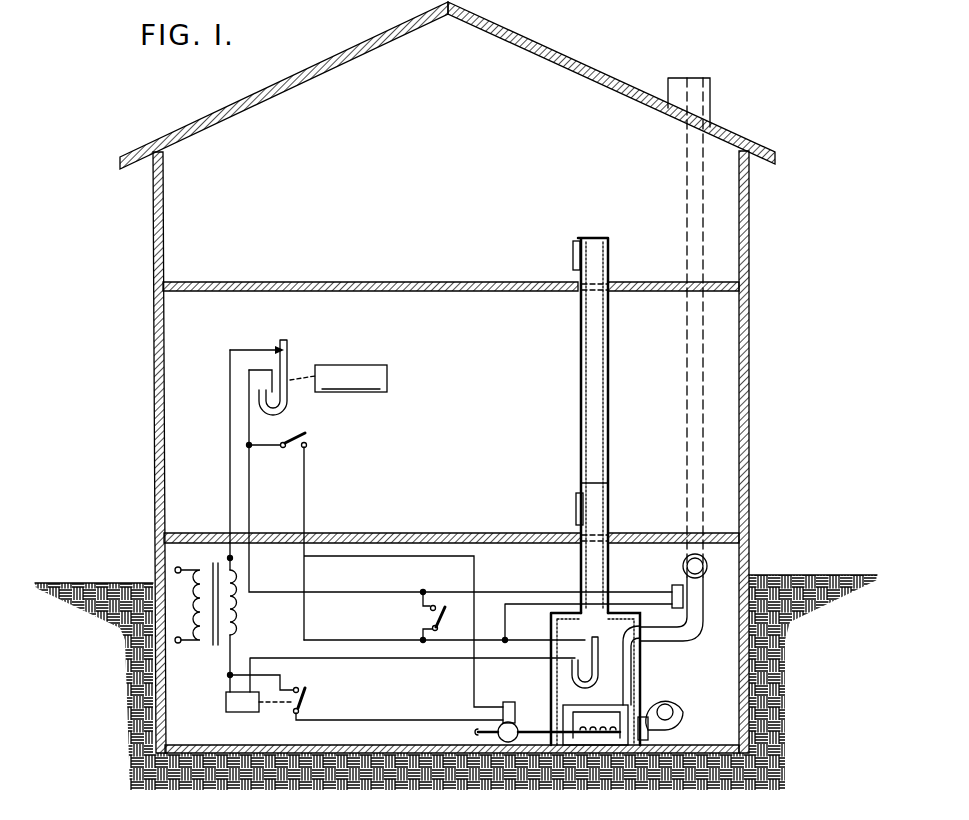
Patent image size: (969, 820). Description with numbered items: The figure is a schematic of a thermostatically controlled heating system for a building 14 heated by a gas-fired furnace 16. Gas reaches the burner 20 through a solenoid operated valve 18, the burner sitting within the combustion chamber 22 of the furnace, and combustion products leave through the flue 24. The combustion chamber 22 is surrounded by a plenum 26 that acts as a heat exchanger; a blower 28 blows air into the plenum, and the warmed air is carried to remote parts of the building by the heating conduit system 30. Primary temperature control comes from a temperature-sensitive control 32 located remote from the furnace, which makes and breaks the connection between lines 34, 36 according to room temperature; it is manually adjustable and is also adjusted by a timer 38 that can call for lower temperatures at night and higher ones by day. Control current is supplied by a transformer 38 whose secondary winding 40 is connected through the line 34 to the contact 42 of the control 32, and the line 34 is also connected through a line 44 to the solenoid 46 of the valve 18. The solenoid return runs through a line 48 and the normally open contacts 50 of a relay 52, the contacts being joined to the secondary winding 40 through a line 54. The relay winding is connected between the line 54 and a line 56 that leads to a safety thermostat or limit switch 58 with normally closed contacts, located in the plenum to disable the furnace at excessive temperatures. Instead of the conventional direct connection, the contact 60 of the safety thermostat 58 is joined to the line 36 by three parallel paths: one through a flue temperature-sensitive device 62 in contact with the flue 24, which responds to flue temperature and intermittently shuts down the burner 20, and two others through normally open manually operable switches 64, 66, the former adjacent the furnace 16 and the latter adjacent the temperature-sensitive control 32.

The building 14 is at (756, 448).
The gas-fired furnace 16 is at (652, 668).
The solenoid operated valve 18 is at (516, 725).
The burner 20 is at (594, 736).
The combustion chamber 22 is at (618, 740).
The flue 24 is at (690, 628).
The plenum 26 is at (648, 697).
The blower 28 is at (684, 712).
The heating conduit system 30 is at (605, 446).
The temperature-sensitive control 32 is at (290, 351).
The line 34 is at (230, 490).
The line 36 is at (249, 492).
The timer / transformer 38 is at (366, 365).
The secondary winding 40 is at (238, 618).
The contact 42 is at (275, 347).
The line 44 is at (412, 556).
The solenoid 46 is at (505, 703).
The line 48 is at (366, 719).
The normally open contacts 50 is at (310, 696).
The relay 52 is at (250, 708).
The line 54 is at (231, 651).
The line 56 is at (415, 659).
The safety thermostat 58 is at (572, 676).
The contact 60 is at (591, 640).
The flue temperature-sensitive device 62 is at (673, 588).
The manually operable switch 64 is at (421, 618).
The manually operable switch 66 is at (305, 432).